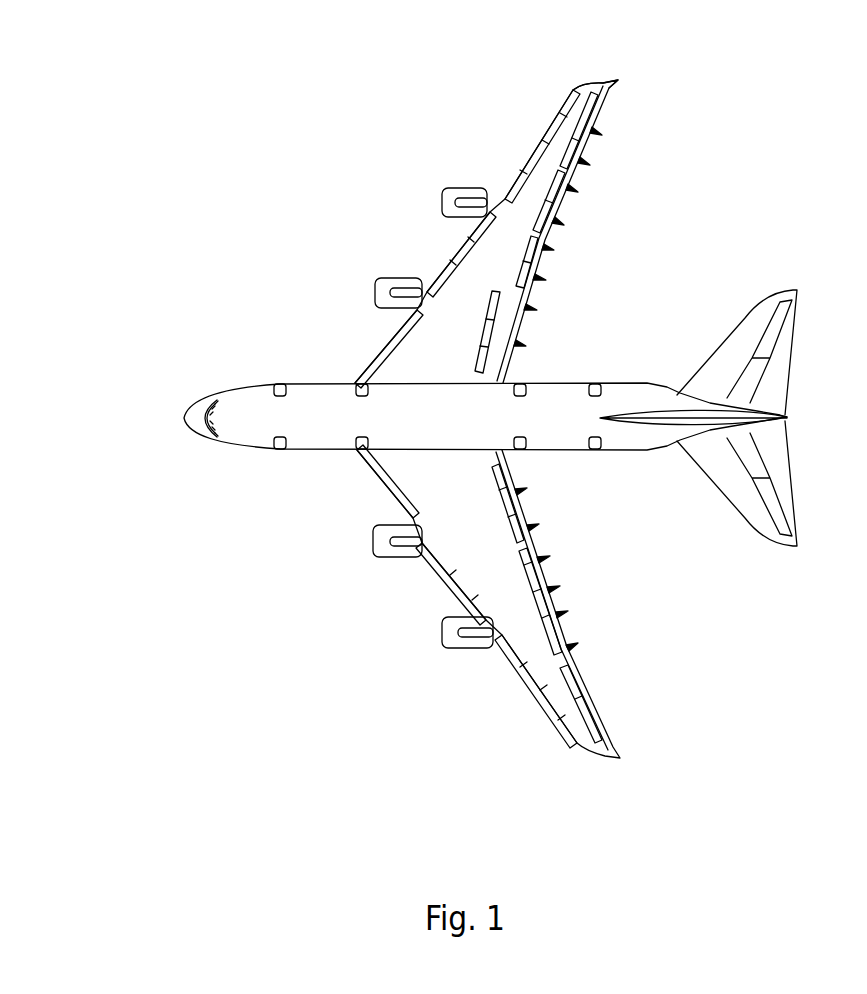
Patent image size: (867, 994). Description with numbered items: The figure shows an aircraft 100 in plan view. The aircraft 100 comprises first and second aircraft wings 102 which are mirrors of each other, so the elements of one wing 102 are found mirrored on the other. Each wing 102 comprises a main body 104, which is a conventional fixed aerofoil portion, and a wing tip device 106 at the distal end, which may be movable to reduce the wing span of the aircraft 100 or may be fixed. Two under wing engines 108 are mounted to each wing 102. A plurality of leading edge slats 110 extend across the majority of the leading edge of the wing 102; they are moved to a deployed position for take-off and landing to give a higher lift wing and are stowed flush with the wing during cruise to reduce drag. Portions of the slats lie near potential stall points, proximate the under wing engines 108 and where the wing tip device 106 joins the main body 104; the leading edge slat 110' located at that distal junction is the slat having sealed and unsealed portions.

The aircraft 100 is at (165, 213).
The aircraft wing 102 is at (586, 171).
The main body 104 is at (495, 258).
The wing tip device 106 is at (617, 82).
The under wing engine 108 is at (457, 195).
The leading edge slat 110 is at (450, 162).
The leading edge slat 110' is at (447, 673).